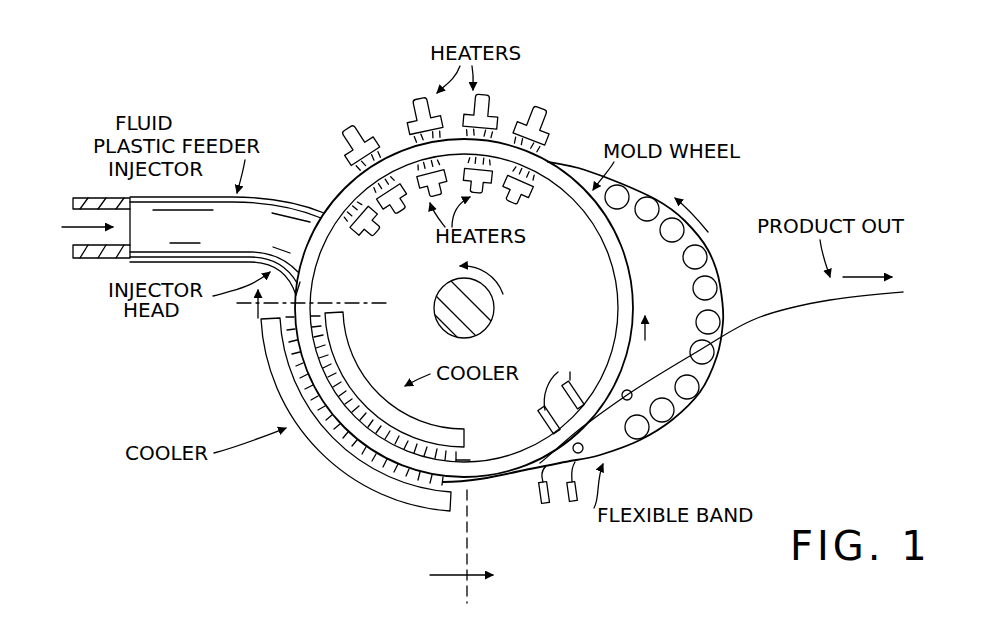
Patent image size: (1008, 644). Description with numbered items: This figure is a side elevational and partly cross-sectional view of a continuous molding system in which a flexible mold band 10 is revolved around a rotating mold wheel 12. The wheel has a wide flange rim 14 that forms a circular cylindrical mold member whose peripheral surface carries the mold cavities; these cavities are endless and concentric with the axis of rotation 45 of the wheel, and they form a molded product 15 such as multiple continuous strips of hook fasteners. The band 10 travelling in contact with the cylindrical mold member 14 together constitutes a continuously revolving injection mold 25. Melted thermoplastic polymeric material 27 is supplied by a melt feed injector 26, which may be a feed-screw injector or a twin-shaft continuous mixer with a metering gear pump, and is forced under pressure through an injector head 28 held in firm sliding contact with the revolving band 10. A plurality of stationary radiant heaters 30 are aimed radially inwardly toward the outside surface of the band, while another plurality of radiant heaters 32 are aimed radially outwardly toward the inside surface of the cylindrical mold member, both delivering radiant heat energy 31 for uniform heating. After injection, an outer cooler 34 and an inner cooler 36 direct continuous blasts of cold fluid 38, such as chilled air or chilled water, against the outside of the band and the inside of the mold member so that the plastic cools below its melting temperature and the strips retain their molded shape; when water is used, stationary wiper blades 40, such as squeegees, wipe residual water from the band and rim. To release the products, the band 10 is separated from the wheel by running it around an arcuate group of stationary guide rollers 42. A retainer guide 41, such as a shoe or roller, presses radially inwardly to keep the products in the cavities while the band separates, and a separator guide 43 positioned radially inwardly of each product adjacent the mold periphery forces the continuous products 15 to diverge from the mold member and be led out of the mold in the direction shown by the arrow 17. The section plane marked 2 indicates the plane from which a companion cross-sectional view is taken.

The flexible mold band 10 is at (634, 450).
The mold wheel 12 is at (538, 306).
The flange rim 14 is at (612, 250).
The molded product 15 is at (860, 297).
The arrow 17 is at (858, 277).
The revolving injection mold 25 is at (337, 193).
The melt feed injector 26 is at (112, 198).
The melted thermoplastic polymeric material 27 is at (60, 230).
The injector head 28 is at (310, 213).
The heaters 30 is at (362, 130).
The radiant heat energy 31 is at (538, 138).
The heaters 32 is at (393, 222).
The outer cooler 34 is at (325, 440).
The inner cooler 36 is at (425, 422).
The cold fluid 38 is at (462, 460).
The wiper blades 40 is at (553, 516).
The retainer guide 41 is at (583, 447).
The guide rollers 42 is at (699, 315).
The separator guide 43 is at (630, 392).
The axis of rotation 45 is at (434, 312).
The section line 2- 2 is at (362, 446).